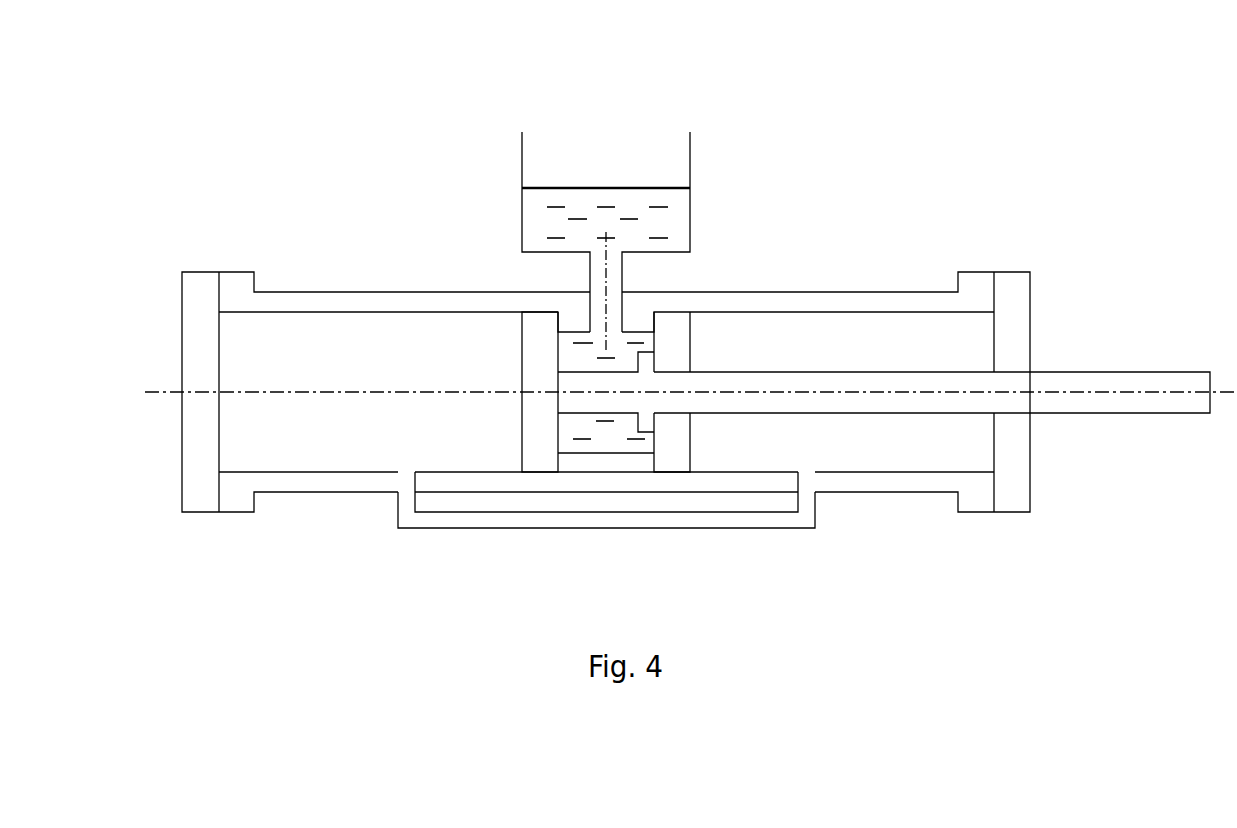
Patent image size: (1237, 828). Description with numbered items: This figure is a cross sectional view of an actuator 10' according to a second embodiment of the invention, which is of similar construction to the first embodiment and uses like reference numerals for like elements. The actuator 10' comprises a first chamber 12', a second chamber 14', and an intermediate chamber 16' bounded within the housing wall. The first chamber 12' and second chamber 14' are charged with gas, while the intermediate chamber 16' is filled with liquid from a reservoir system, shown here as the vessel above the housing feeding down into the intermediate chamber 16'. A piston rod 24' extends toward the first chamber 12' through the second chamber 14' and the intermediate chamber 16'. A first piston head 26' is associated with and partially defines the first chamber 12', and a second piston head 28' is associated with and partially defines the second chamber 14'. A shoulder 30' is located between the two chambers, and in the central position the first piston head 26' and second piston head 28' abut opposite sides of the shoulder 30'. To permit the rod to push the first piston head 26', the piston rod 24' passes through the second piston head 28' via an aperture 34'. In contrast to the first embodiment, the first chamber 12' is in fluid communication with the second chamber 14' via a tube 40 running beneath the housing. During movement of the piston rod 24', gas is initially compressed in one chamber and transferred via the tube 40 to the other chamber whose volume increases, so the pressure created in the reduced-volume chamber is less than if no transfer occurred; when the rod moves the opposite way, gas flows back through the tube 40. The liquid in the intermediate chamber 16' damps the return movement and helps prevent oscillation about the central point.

The actuator 10' is at (691, 224).
The first chamber 12' is at (386, 335).
The second chamber 14' is at (826, 325).
The intermediate chamber 16' is at (633, 245).
The piston rod 24' is at (1120, 357).
The first piston head 26' is at (490, 464).
The second piston head 28' is at (763, 479).
The shoulder 30' is at (596, 504).
The aperture 34' is at (794, 330).
The tube 40 is at (650, 530).